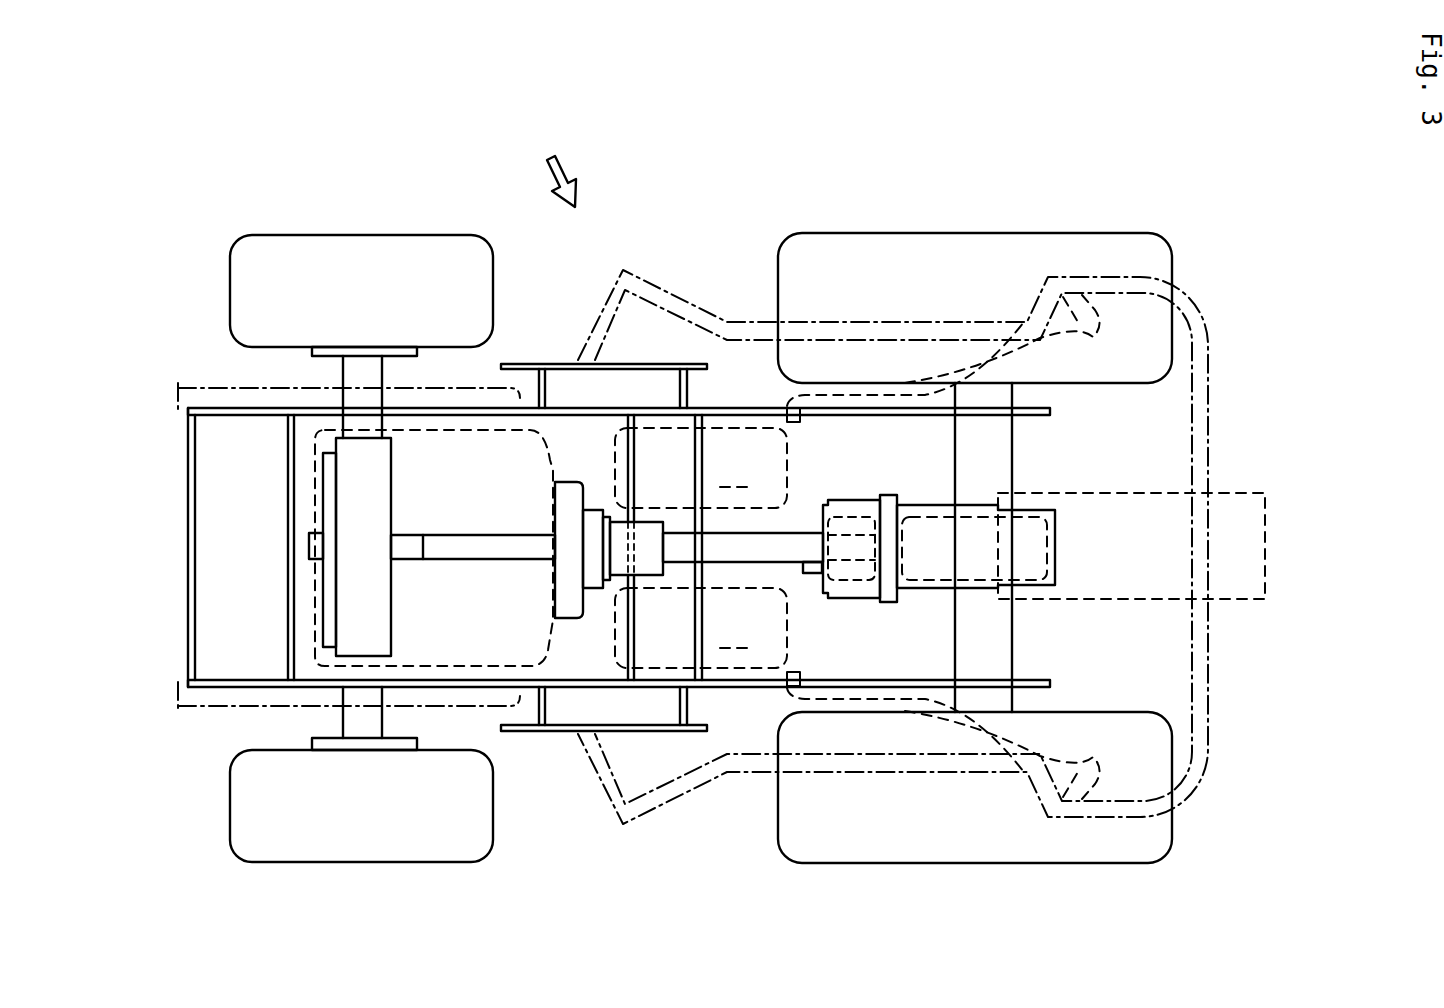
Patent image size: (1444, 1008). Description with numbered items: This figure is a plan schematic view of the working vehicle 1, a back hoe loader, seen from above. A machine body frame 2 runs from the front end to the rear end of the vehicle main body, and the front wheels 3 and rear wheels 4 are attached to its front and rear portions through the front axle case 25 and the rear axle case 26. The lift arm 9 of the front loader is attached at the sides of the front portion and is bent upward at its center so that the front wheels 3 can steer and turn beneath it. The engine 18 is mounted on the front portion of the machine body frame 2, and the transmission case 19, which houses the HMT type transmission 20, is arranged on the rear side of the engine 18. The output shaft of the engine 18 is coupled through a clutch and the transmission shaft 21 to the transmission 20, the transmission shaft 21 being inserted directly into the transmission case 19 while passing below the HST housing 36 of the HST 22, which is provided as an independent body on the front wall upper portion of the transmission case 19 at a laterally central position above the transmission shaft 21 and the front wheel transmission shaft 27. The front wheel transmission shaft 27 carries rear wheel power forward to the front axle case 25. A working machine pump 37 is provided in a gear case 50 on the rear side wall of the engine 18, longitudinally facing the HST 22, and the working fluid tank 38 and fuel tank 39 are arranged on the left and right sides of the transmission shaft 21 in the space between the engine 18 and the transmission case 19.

The working vehicle 1 is at (556, 160).
The machine body frame 2 is at (189, 570).
The front wheels 3 is at (230, 290).
The rear wheels 4 is at (778, 278).
The lift arm 9 is at (228, 384).
The engine 18 is at (316, 511).
The transmission case 19 is at (928, 590).
The transmission 20 is at (920, 489).
The transmission shaft 21 is at (780, 563).
The HST 22 is at (862, 500).
The front axle case 25 is at (392, 611).
The rear axle case 26 is at (1012, 641).
The front wheel transmission shaft 27 is at (465, 532).
The HST housing 36 is at (828, 500).
The working machine pump 37 is at (623, 520).
The working fluid tank 38 is at (701, 468).
The fuel tank 39 is at (701, 628).
The gear case 50 is at (601, 590).